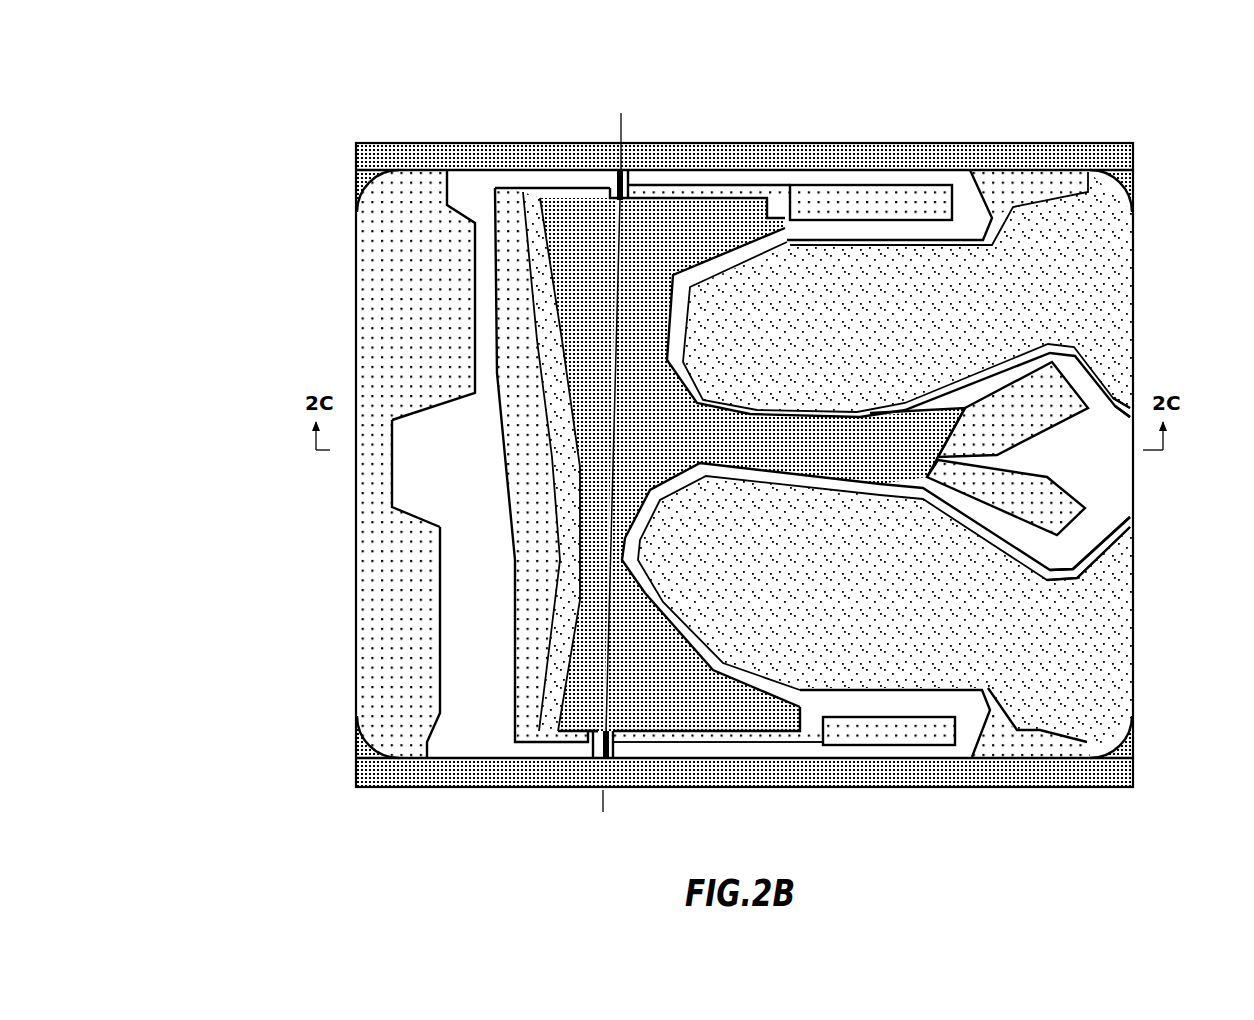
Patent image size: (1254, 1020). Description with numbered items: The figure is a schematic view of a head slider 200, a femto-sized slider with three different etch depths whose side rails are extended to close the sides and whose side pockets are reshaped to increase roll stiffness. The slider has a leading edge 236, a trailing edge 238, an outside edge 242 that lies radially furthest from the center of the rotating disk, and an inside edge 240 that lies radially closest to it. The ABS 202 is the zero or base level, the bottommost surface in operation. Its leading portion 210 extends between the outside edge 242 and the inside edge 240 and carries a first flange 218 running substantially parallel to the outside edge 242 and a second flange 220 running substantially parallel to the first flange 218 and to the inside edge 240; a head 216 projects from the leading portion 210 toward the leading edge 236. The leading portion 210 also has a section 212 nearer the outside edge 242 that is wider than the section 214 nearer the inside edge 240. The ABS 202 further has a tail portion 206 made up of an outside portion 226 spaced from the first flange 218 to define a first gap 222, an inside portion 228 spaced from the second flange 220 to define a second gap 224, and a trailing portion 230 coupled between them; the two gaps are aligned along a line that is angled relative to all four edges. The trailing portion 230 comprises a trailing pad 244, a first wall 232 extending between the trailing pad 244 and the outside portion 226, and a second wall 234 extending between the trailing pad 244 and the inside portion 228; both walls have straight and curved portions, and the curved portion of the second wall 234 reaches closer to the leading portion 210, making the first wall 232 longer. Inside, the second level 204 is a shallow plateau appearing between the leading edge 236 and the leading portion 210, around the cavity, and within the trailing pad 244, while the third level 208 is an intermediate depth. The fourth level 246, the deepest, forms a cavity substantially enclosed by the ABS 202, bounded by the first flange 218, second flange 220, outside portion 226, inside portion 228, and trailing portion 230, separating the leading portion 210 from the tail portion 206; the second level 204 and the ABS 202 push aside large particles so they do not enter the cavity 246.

The head slider 200 is at (325, 118).
The ABS 202 is at (443, 790).
The second level 204 is at (380, 318).
The tail portion 206 is at (1133, 302).
The third level 208 is at (540, 655).
The leading portion 210 is at (440, 520).
The section closer to outside edge 212 is at (475, 680).
The section closer to inside edge 214 is at (475, 272).
The head 216 is at (395, 430).
The first flange 218 is at (518, 790).
The second flange 220 is at (556, 186).
The first gap 222 is at (609, 790).
The second gap 224 is at (623, 172).
The outside portion 226 is at (828, 790).
The inside portion 228 is at (860, 183).
The trailing portion 230 is at (1133, 395).
The first wall 232 is at (717, 642).
The second wall 234 is at (690, 338).
The leading edge 236 is at (353, 605).
The trailing edge 238 is at (1133, 630).
The inside edge 240 is at (1022, 142).
The outside edge 242 is at (1012, 790).
The trailing pad 244 is at (1133, 515).
The fourth level 246 is at (588, 262).